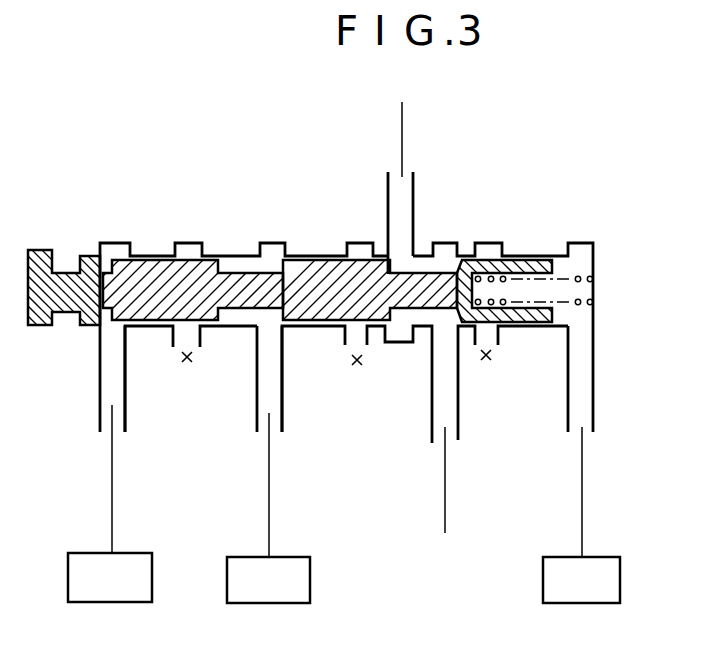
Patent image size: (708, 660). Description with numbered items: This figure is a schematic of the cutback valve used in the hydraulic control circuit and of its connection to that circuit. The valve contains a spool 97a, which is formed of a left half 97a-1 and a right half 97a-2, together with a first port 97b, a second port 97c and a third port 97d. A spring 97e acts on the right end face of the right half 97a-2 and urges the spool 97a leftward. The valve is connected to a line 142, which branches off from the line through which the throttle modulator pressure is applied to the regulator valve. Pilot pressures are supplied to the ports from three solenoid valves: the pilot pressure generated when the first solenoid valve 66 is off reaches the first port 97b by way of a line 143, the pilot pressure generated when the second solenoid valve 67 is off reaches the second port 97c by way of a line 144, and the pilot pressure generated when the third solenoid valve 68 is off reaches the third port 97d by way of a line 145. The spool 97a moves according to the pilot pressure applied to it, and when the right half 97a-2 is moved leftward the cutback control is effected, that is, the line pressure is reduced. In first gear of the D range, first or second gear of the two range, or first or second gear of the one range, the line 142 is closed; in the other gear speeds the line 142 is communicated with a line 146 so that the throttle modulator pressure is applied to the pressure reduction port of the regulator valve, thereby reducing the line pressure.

The line 142 is at (402, 132).
The spool 97a is at (367, 184).
The left half 97a-1 is at (158, 277).
The right half 97a-2 is at (330, 274).
The spring 97e is at (578, 274).
The third port 97d is at (98, 410).
The first port 97b is at (257, 413).
The second port 97c is at (567, 412).
The line 145 is at (112, 487).
The line 143 is at (268, 495).
The line 146 is at (445, 497).
The line 144 is at (582, 498).
The third solenoid valve 68 is at (127, 594).
The first solenoid valve 66 is at (288, 595).
The second solenoid valve 67 is at (598, 593).